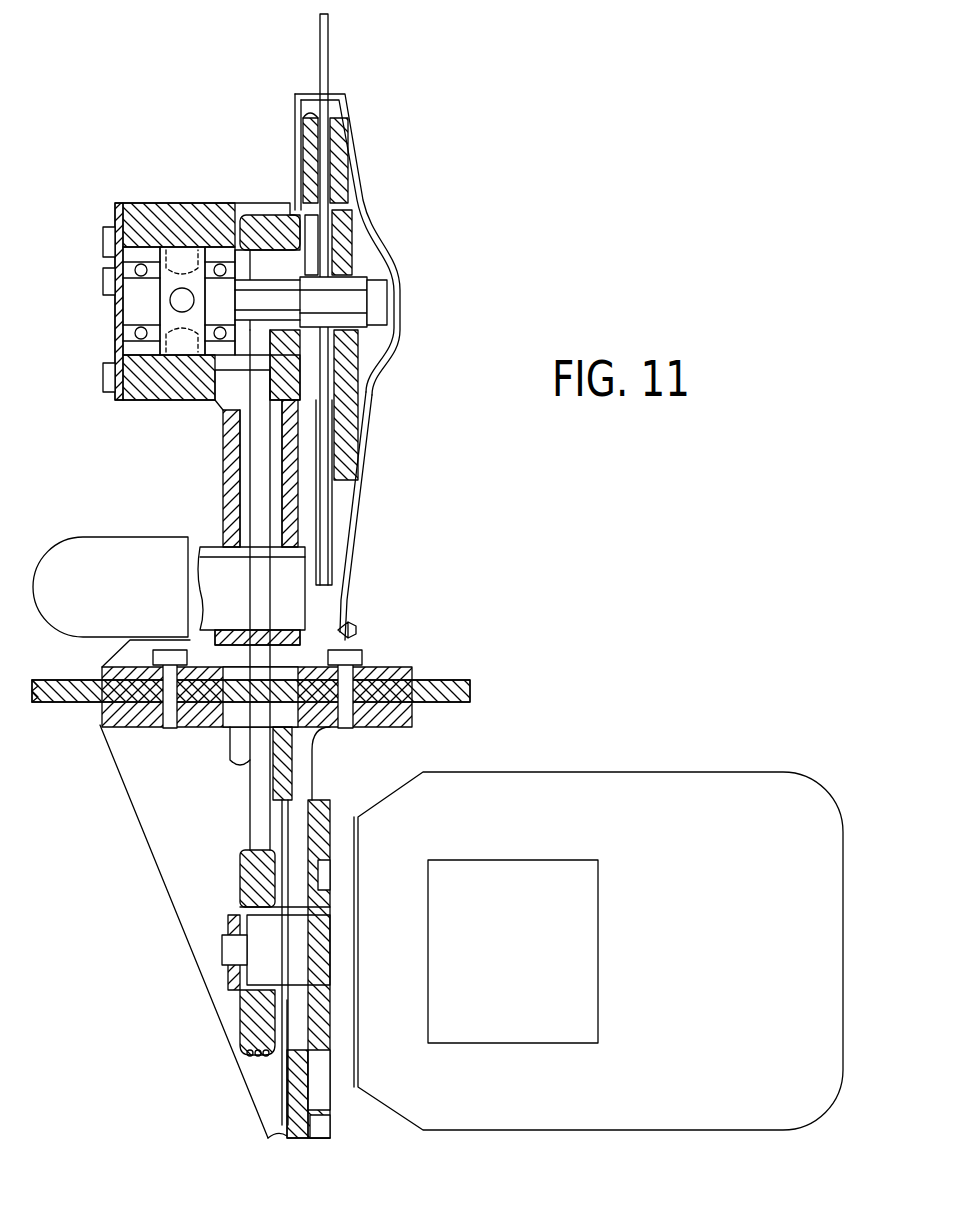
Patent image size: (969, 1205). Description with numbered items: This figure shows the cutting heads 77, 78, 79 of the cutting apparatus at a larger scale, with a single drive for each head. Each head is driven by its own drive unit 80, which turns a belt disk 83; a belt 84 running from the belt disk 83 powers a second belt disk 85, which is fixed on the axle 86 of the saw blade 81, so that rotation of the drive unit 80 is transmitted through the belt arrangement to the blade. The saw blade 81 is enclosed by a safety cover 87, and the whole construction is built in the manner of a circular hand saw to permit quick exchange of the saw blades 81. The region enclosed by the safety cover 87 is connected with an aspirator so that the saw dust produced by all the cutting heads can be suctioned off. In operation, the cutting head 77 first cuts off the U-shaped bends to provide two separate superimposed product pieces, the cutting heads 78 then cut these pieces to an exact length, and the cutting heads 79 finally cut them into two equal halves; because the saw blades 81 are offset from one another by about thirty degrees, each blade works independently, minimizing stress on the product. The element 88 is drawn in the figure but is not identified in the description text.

The cutting head 77 is at (598, 690).
The cutting head 78 is at (170, 689).
The cutting head 79 is at (345, 689).
The drive unit 80 is at (632, 790).
The saw blade 81 is at (329, 48).
The belt disk 83 is at (247, 1022).
The belt 84 is at (250, 762).
The belt disk 85 is at (220, 408).
The axle 86 is at (403, 302).
The safety cover 87 is at (349, 600).
The cylinder 88 is at (105, 537).